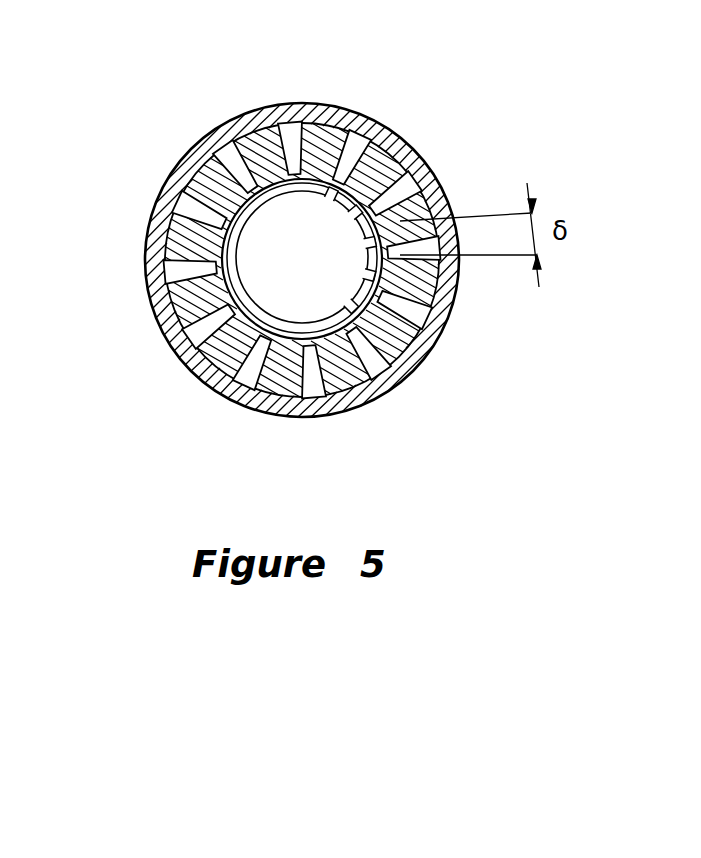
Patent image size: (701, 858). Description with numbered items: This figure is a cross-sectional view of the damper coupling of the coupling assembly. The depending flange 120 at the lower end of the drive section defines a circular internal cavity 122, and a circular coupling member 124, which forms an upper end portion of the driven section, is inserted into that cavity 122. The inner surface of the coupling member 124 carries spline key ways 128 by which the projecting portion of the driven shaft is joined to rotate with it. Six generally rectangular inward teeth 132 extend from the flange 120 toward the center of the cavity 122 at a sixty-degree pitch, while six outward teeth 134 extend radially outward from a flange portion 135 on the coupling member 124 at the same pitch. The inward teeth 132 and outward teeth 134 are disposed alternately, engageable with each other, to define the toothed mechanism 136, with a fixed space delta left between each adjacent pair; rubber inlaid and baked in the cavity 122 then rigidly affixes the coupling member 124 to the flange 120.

The depending flange 120 is at (405, 140).
The internal cavity 122 is at (163, 258).
The coupling member 124 is at (240, 385).
The spline key ways 128 is at (348, 213).
The inward teeth 132 is at (348, 252).
The outward teeth 134 is at (458, 290).
The flange portion 135 is at (290, 140).
The toothed mechanism 136 is at (418, 177).